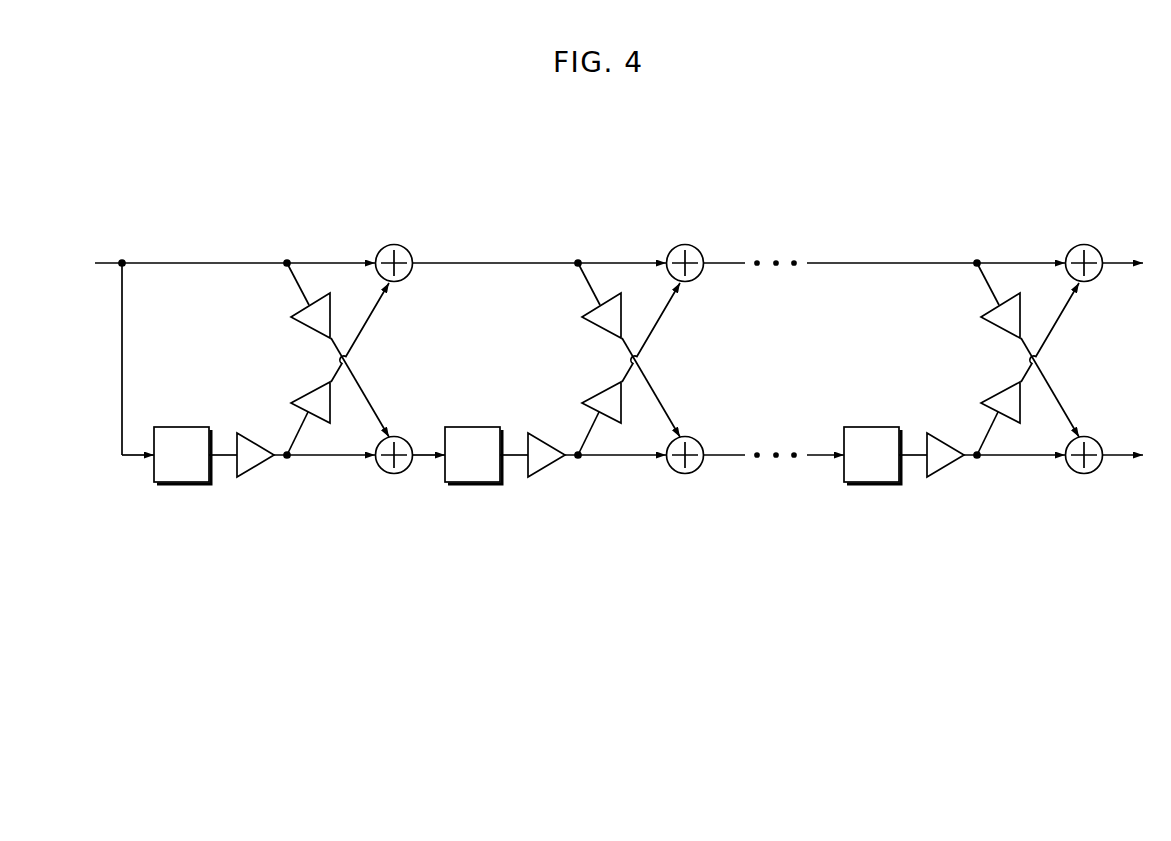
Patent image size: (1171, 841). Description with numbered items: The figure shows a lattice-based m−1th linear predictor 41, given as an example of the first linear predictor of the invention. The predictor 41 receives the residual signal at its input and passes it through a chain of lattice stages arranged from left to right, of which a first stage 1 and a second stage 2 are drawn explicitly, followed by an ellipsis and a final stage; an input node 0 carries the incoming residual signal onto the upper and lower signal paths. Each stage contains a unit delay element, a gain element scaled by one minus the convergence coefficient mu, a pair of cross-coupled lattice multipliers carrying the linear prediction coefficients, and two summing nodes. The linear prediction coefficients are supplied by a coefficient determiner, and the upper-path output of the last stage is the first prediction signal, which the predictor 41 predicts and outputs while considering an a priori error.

The lattice-based m−1th linear predictor 41 is at (537, 207).
The input node (b0, c0) 0 is at (125, 361).
The first lattice stage (k1) 1 is at (287, 361).
The second lattice stage (k2) 2 is at (578, 361).